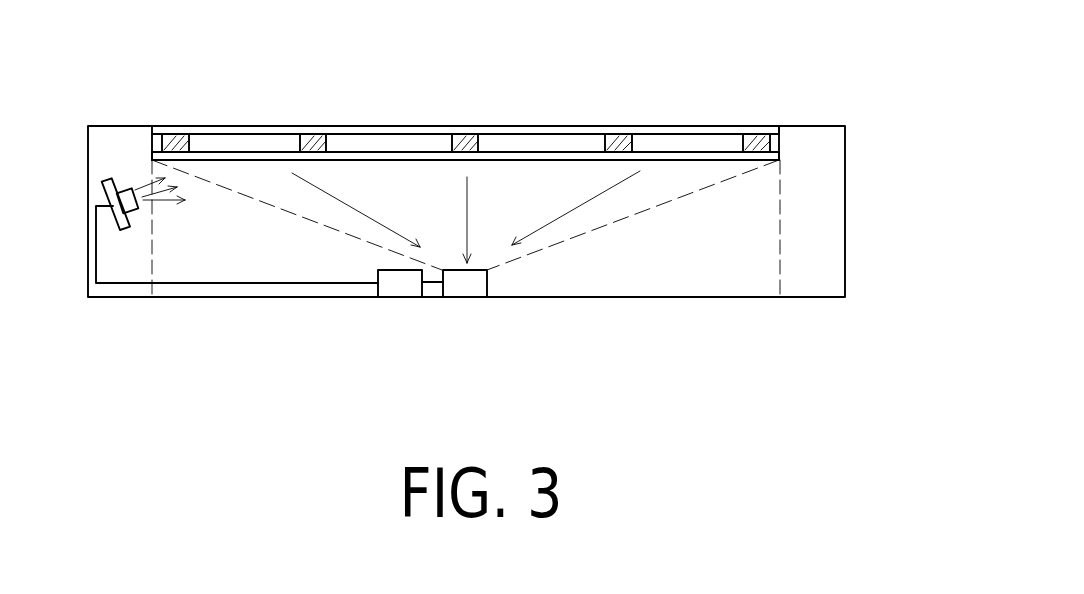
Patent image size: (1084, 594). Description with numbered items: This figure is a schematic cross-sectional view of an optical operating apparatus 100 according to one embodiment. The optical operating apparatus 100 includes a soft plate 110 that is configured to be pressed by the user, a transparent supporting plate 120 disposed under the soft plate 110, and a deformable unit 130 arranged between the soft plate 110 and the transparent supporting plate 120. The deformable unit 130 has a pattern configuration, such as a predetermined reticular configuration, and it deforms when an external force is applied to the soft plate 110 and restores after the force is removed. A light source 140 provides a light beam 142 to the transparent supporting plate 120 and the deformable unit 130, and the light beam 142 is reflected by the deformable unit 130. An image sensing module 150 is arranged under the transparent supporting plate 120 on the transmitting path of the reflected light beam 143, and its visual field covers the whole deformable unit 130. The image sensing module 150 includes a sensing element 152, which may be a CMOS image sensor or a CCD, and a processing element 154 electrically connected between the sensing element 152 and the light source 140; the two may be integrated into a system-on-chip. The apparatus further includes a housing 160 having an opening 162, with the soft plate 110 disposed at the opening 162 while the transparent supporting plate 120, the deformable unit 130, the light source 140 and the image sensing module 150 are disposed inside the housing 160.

The optical operating apparatus 100 is at (487, 232).
The soft plate 110 is at (377, 133).
The transparent supporting plate 120 is at (772, 157).
The deformable unit 130 is at (625, 143).
The light source 140 is at (107, 180).
The light beam 142 is at (163, 202).
The reflected light beam 143 is at (467, 195).
The image sensing module 150 is at (430, 338).
The sensing element 152 is at (465, 315).
The processing element 154 is at (393, 292).
The housing 160 is at (847, 258).
The opening 162 is at (776, 124).